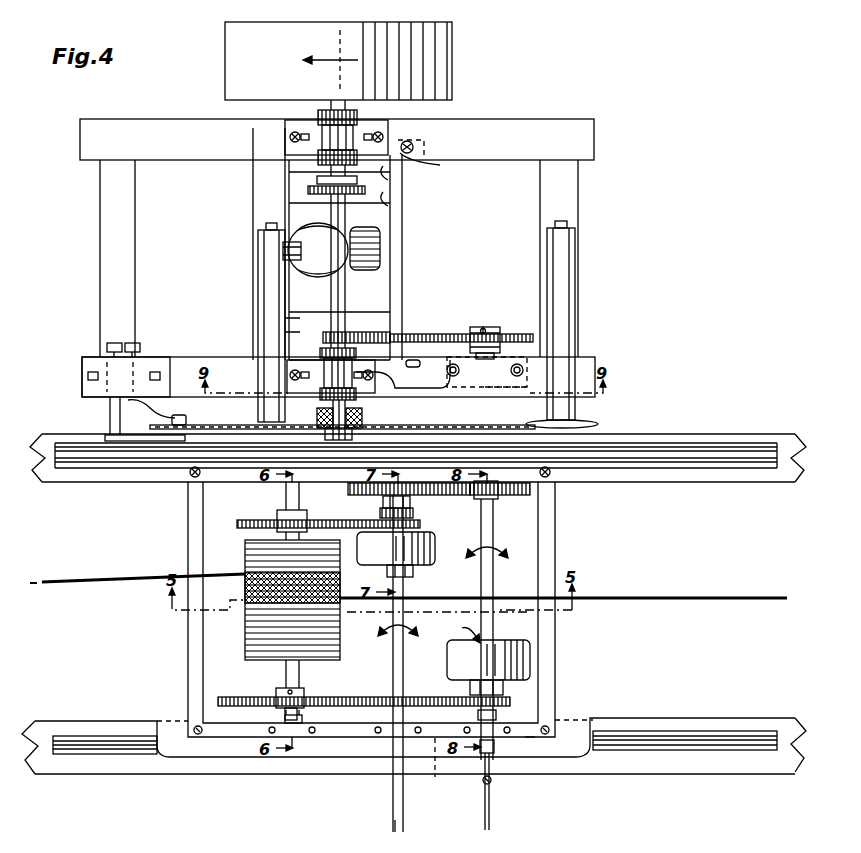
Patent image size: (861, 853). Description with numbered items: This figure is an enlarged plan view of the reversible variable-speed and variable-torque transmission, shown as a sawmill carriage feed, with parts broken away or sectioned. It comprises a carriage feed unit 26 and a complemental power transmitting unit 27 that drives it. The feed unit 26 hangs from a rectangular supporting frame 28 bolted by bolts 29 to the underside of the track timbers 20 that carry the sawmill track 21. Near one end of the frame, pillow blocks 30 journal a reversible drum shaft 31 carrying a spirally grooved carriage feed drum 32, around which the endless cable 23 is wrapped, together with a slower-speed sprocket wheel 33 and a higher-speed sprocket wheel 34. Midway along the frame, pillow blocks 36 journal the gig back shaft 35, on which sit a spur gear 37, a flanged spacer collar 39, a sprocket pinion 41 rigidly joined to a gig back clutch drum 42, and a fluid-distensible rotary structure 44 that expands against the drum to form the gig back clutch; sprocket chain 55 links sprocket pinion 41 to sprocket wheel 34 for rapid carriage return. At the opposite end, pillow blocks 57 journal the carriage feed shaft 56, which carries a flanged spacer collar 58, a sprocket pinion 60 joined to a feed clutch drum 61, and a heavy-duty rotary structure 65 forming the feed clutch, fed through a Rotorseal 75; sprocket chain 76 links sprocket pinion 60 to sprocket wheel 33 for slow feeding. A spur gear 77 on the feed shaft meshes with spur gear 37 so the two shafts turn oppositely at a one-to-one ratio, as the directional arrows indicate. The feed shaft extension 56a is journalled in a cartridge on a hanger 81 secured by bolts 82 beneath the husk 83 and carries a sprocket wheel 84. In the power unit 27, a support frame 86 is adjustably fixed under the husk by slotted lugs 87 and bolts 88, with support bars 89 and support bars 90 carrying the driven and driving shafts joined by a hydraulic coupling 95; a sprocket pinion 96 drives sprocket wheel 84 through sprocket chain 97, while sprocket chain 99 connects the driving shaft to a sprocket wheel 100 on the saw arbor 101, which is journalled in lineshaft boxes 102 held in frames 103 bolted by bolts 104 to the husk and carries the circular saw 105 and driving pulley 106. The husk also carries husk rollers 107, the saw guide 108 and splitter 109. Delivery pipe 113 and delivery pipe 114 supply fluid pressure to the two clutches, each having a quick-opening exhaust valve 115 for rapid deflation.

The track timbers 20 is at (680, 434).
The sawmill track 21 is at (737, 449).
The endless cable 23 is at (55, 586).
The carriage feed unit 26 is at (235, 652).
The power transmitting unit 27 is at (372, 226).
The supporting frame 28 is at (190, 636).
The bolts 29 is at (190, 475).
The ball bearing pillow blocks 30 is at (325, 740).
The drum shaft 31 is at (286, 676).
The carriage feed drum 32 is at (247, 558).
The sprocket wheel 33 is at (312, 695).
The sprocket wheel 34 is at (280, 516).
The gig back shaft 35 is at (395, 655).
The ball bearing pillow blocks 36 is at (435, 778).
The spur gear 37 is at (348, 489).
The flanged spacer collar 39 is at (383, 504).
The sprocket pinion 41 is at (413, 513).
The gig back clutch drum 42 is at (436, 546).
The fluid-distensible torque transmitting rotary structure 44 is at (413, 572).
The endless sprocket chain 55 is at (237, 525).
The carriage feed shaft 56 is at (495, 577).
The extension 56a is at (483, 326).
The ball bearing pillow blocks 57 is at (530, 740).
The flanged spacer collar 58 is at (496, 718).
The sprocket pinion 60 is at (503, 708).
The feed clutch drum 61 is at (525, 650).
The fluid-distensible torque transmitting rotary structure 65 is at (455, 627).
The Rotorseal 75 is at (494, 745).
The endless sprocket chain 76 is at (357, 707).
The spur gear 77 is at (512, 497).
The webbed bracket or hanger 81 is at (492, 388).
The bolts 82 is at (511, 370).
The husk or saw frame 83 is at (103, 240).
The sprocket wheel 84 is at (495, 330).
The support frame 86 is at (396, 262).
The slotted angular lugs 87 is at (414, 146).
The bolts 88 is at (413, 153).
The support bars 89 is at (285, 332).
The support bars 90 is at (388, 176).
The hydraulic coupling 95 is at (383, 243).
The sprocket pinion 96 is at (325, 336).
The endless sprocket chain 97 is at (456, 328).
The endless sprocket chain 99 is at (308, 190).
The sprocket wheel 100 is at (318, 182).
The saw arbor or main shaft 101 is at (300, 268).
The ball bearing lineshaft boxes 102 is at (357, 120).
The frames 103 is at (296, 124).
The bolts 104 is at (290, 137).
The circular saw 105 is at (198, 422).
The driving pulley 106 is at (430, 47).
The husk rollers 107 is at (265, 251).
The adjustable saw guide 108 is at (112, 420).
The splitter 109 is at (598, 422).
The fluid pressure delivery pipe 113 is at (397, 822).
The fluid pressure delivery pipe 114 is at (492, 818).
The quick-opening automatic exhaust valve 115 is at (484, 782).